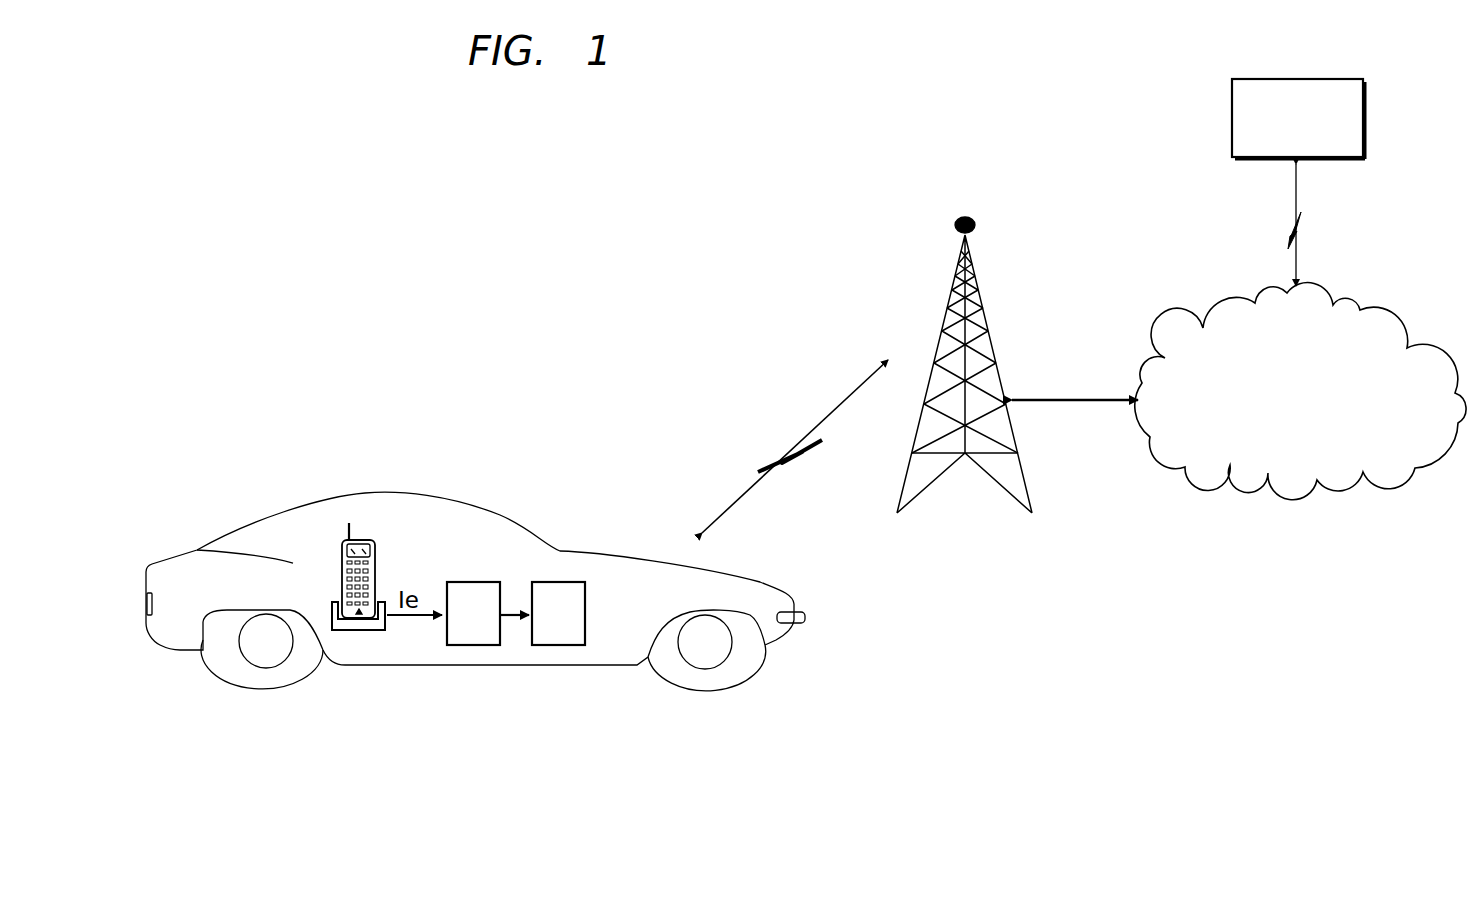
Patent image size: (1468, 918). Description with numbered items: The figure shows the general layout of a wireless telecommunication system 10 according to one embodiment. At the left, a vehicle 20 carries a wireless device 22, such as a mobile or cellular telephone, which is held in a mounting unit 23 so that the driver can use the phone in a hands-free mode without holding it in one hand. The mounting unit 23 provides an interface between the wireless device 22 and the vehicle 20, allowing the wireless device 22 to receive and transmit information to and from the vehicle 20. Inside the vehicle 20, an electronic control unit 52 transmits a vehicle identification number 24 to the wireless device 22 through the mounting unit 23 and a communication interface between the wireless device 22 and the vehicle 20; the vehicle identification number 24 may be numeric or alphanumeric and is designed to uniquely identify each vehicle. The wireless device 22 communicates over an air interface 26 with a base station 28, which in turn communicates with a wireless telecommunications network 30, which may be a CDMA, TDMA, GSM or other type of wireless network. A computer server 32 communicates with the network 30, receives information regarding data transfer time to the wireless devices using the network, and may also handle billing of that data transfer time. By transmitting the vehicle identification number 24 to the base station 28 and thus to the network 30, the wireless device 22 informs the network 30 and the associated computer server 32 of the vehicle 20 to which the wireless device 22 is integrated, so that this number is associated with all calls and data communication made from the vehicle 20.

The wireless telecommunication system 10 is at (601, 200).
The vehicle 20 is at (355, 493).
The wireless device 22 is at (364, 540).
The mounting unit 23 is at (335, 600).
The vehicle identification number 24 is at (477, 582).
The air interface 26 is at (766, 458).
The base station 28 is at (977, 275).
The wireless telecommunications network 30 is at (1365, 306).
The computer server 32 is at (1364, 120).
The electronic control unit 52 is at (586, 608).